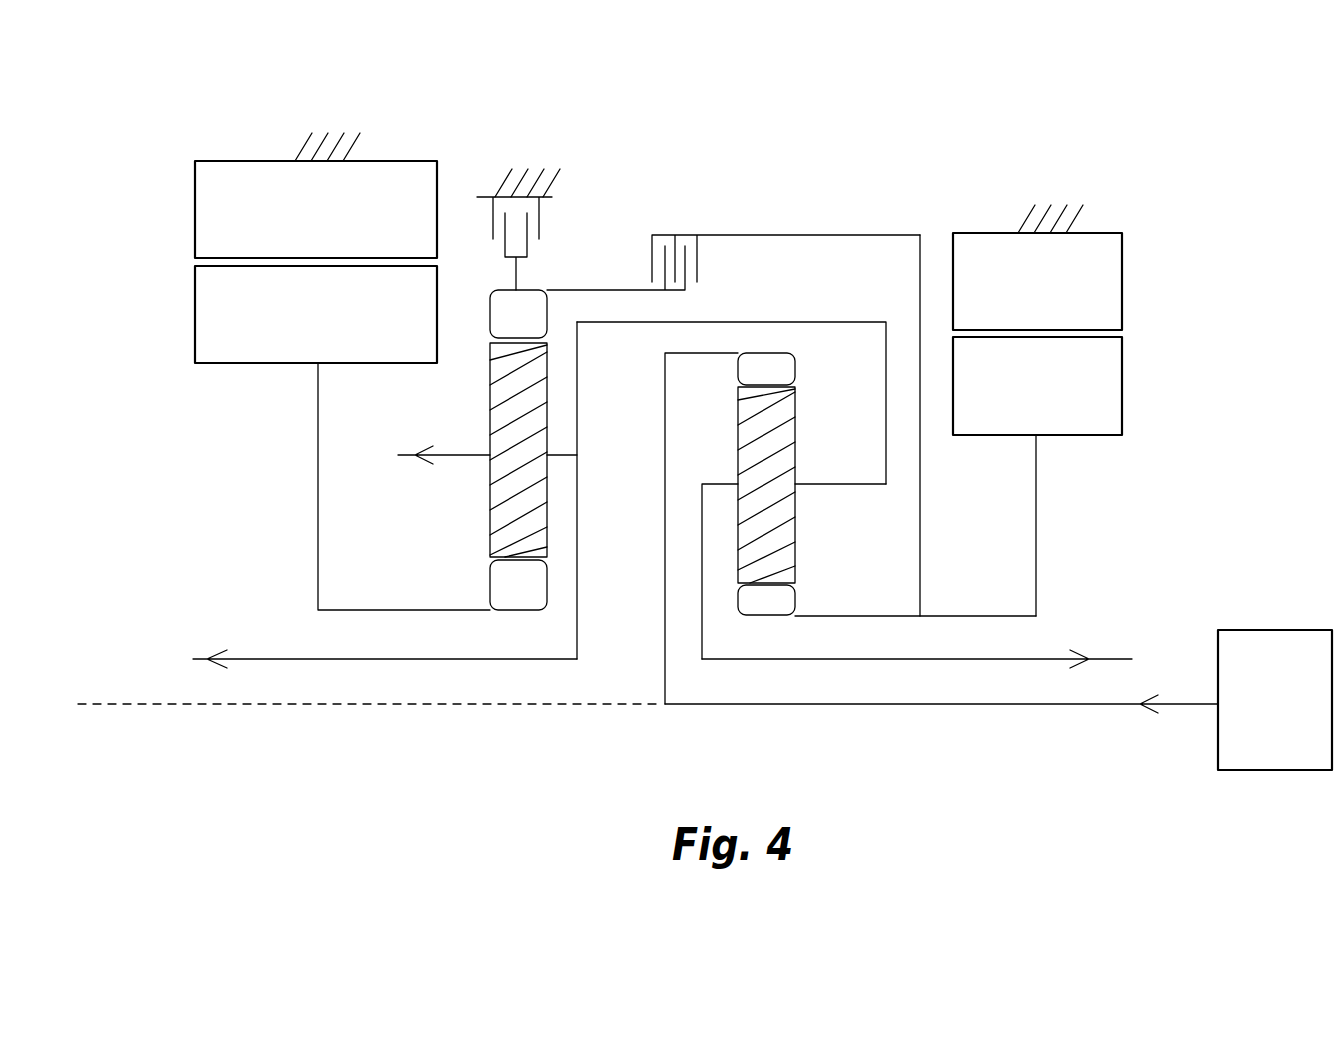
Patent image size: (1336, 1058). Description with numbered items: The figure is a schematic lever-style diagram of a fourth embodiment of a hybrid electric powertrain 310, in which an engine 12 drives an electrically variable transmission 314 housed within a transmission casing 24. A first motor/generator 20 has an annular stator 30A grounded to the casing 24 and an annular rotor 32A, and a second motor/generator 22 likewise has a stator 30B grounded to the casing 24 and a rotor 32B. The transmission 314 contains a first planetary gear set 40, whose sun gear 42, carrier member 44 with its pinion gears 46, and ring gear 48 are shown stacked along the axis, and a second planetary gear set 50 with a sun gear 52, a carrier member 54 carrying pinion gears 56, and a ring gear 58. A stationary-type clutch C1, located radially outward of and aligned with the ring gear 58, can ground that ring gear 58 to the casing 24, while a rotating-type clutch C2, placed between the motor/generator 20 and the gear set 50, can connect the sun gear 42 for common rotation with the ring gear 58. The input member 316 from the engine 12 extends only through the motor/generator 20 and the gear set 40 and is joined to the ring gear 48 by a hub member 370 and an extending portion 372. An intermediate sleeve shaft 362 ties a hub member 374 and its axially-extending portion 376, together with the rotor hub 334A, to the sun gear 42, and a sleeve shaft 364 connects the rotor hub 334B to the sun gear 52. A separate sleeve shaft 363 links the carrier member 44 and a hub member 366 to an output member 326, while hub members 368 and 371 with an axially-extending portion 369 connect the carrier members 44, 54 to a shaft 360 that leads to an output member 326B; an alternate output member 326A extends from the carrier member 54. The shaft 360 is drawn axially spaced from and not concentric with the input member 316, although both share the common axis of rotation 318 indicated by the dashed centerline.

The engine 12 is at (1275, 700).
The first motor/generator 20 is at (1147, 356).
The second motor/generator 22 is at (182, 316).
The transmission casing 24 is at (298, 150).
The annular stator 30A is at (1037, 281).
The annular stator 30B is at (316, 209).
The annular rotor 32A is at (1037, 386).
The annular rotor 32B is at (316, 314).
The first planetary gear set 40 is at (795, 506).
The sun gear 42 is at (796, 600).
The carrier member 44 is at (710, 483).
The pinion gears 46 is at (796, 528).
The ring gear 48 is at (796, 372).
The second planetary gear set 50 is at (494, 450).
The sun gear 52 is at (489, 583).
The carrier member 54 is at (578, 452).
The pinion gears 56 is at (489, 529).
The ring gear 58 is at (548, 314).
The stationary-type clutch C1 is at (562, 210).
The rotating-type clutch C2 is at (640, 247).
The powertrain 310 is at (1125, 153).
The electrically variable transmission 314 is at (212, 122).
The input member 316 is at (940, 706).
The axis of rotation 318 is at (480, 706).
The output member 326 is at (1108, 662).
The alternate output member 326A is at (470, 453).
The output member 326B is at (243, 662).
The rotor hub 334A is at (1034, 478).
The rotor hub 334B is at (316, 462).
The shaft 360 is at (332, 662).
The intermediate sleeve shaft 362 is at (975, 614).
The sleeve shaft 363 is at (836, 662).
The sleeve shaft 364 is at (362, 608).
The hub member 366 is at (700, 612).
The hub member 368 is at (578, 601).
The axially-extending portion 369 is at (740, 320).
The hub member 370 is at (660, 468).
The hub member 371 is at (884, 430).
The extending portion 372 is at (685, 352).
The hub member 374 is at (918, 263).
The axially-extending portion 376 is at (790, 234).